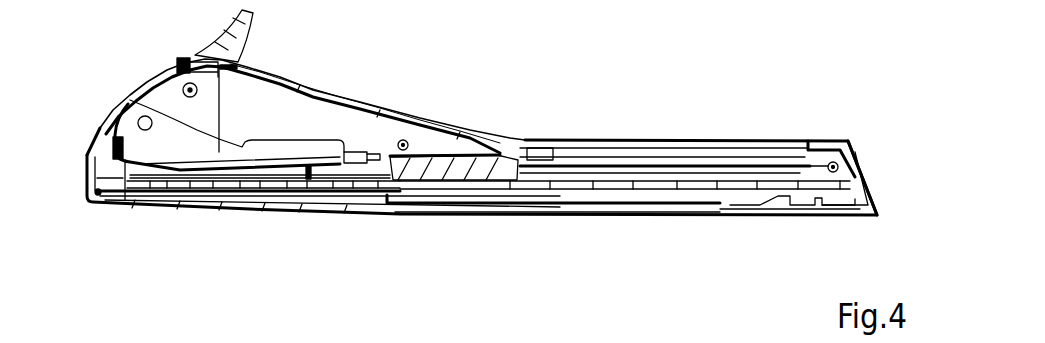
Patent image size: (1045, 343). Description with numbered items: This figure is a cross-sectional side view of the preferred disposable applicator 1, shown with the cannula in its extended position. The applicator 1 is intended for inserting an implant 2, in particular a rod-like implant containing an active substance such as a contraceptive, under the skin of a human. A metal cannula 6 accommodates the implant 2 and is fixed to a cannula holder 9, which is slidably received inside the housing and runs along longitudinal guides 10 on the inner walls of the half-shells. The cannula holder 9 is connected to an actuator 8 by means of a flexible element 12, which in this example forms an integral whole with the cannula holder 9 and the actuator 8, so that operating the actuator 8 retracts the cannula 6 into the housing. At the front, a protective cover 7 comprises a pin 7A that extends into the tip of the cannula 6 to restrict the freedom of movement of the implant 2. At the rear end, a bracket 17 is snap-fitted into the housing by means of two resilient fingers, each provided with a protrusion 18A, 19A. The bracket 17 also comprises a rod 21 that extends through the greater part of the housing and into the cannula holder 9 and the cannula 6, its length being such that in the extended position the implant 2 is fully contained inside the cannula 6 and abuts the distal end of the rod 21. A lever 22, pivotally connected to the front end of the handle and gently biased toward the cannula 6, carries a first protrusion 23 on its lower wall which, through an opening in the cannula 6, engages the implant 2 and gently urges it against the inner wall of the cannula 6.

The disposable applicator 1 is at (131, 56).
The implant 2 is at (262, 189).
The metal cannula 6 is at (219, 192).
The protective cover 7 is at (136, 203).
The pin 7A is at (100, 195).
The actuator 8 is at (247, 22).
The cannula holder 9 is at (481, 166).
The longitudinal guides 10 is at (732, 166).
The flexible element 12 is at (381, 122).
The bracket 17 is at (860, 183).
The protrusion 18A is at (817, 150).
The protrusion 19A is at (817, 205).
The rod 21 is at (653, 188).
The lever 22 is at (188, 150).
The first protrusion 23 is at (310, 182).